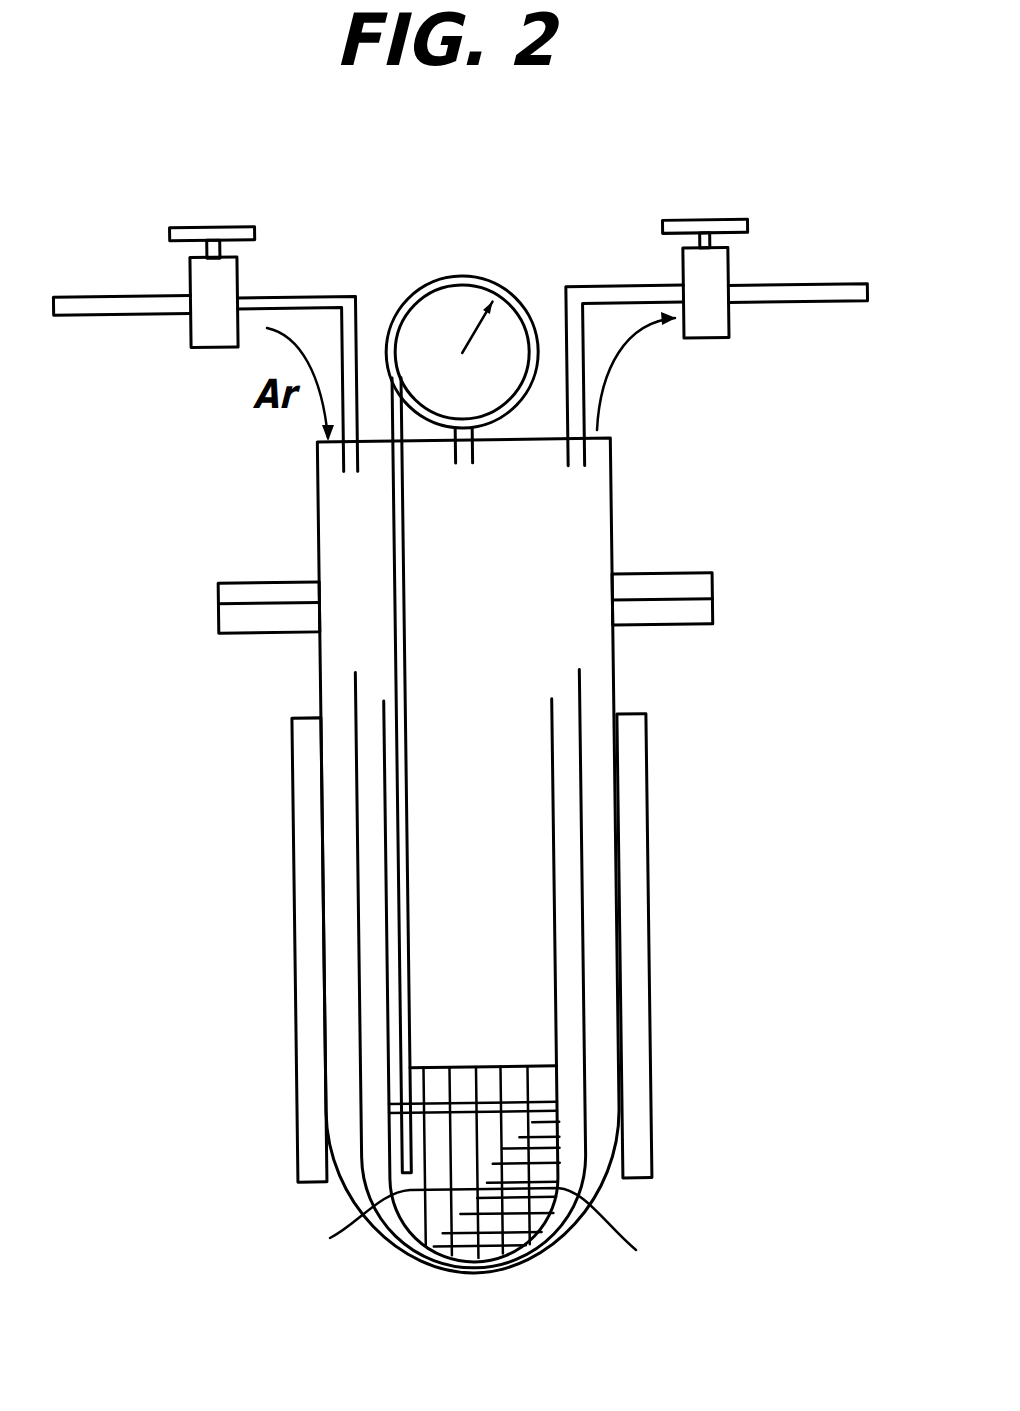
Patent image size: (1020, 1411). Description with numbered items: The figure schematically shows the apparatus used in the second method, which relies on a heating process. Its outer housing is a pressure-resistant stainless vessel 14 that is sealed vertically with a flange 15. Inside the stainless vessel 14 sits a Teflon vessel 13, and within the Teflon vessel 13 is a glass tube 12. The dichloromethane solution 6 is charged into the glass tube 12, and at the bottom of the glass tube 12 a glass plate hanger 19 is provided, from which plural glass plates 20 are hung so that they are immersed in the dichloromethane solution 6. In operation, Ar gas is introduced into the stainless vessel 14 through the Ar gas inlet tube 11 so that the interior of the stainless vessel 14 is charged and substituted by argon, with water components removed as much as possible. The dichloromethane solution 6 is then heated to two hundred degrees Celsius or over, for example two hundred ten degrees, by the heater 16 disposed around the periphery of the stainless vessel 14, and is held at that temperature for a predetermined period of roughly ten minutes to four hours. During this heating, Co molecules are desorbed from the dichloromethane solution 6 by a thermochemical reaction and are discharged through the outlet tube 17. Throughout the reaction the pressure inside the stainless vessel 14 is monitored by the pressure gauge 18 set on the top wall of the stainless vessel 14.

The dichloromethane solution 6 is at (357, 1305).
The Ar gas inlet tube 11 is at (238, 283).
The glass tube 12 is at (555, 722).
The Teflon vessel 13 is at (583, 696).
The pressure-resistant stainless vessel 14 is at (257, 488).
The flange 15 is at (175, 597).
The heater 16 is at (641, 910).
The outlet tube 17 is at (684, 272).
The pressure gauge 18 is at (458, 282).
The glass plate hanger 19 is at (432, 1083).
The glass plates 20 is at (479, 1232).